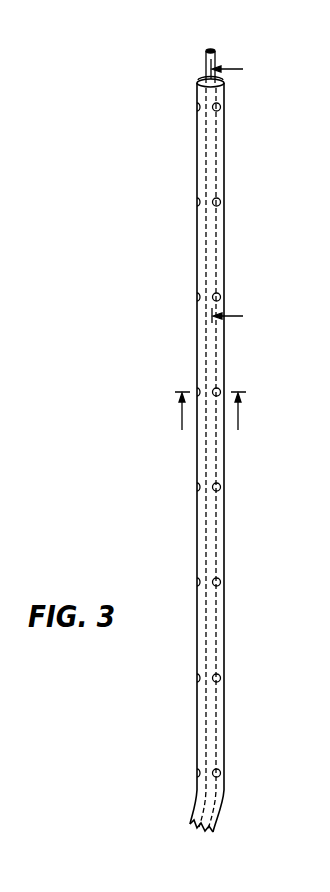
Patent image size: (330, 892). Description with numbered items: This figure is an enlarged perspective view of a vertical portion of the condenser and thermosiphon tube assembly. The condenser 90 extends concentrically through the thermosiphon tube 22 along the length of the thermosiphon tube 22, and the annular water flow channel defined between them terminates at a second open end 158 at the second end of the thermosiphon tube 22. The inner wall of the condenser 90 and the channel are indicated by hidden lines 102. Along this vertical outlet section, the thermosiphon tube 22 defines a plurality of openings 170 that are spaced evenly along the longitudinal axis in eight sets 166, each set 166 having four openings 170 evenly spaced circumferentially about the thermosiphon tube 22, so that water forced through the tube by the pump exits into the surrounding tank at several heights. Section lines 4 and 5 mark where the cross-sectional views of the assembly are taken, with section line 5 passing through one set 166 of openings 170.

The thermosiphon tube 22 is at (225, 236).
The condenser 90 is at (216, 56).
The lumen 102 is at (219, 152).
The second open end 158 is at (193, 75).
The sets 166 is at (189, 107).
The openings 170 is at (220, 107).
The section line 4 is at (235, 193).
The section line 5 is at (210, 421).